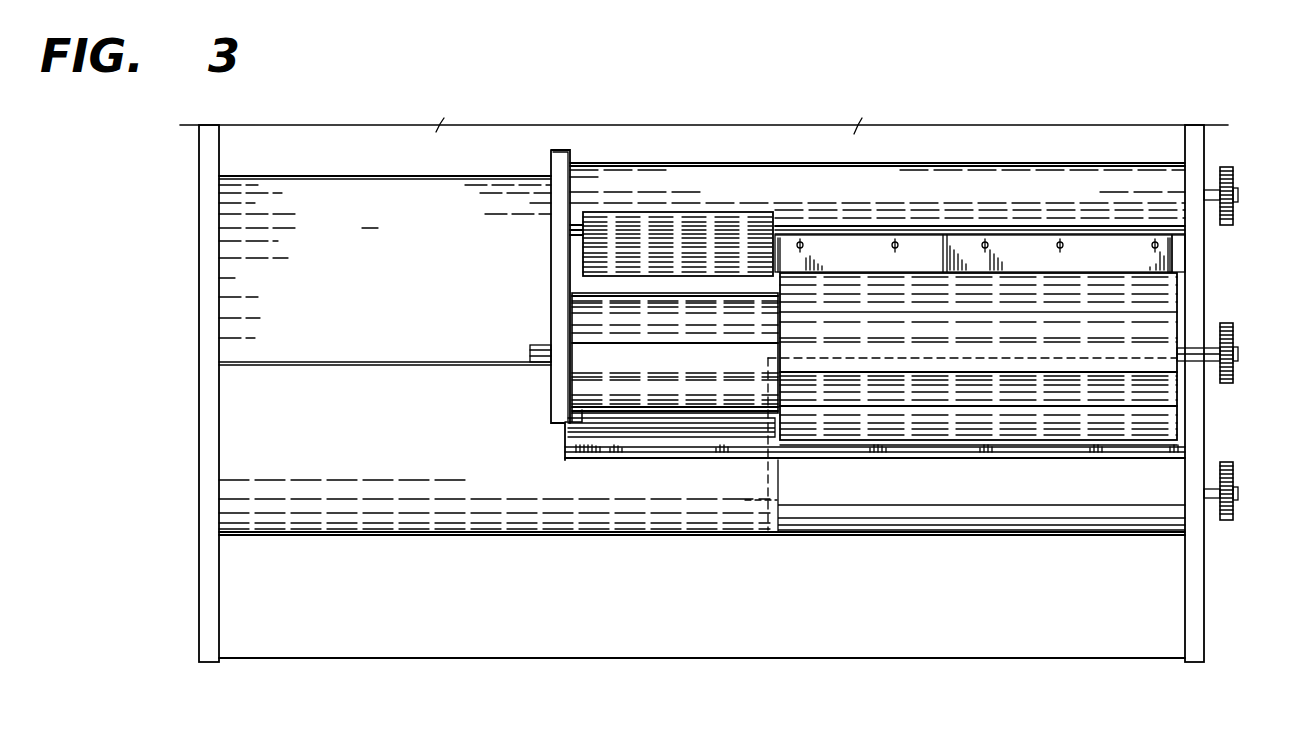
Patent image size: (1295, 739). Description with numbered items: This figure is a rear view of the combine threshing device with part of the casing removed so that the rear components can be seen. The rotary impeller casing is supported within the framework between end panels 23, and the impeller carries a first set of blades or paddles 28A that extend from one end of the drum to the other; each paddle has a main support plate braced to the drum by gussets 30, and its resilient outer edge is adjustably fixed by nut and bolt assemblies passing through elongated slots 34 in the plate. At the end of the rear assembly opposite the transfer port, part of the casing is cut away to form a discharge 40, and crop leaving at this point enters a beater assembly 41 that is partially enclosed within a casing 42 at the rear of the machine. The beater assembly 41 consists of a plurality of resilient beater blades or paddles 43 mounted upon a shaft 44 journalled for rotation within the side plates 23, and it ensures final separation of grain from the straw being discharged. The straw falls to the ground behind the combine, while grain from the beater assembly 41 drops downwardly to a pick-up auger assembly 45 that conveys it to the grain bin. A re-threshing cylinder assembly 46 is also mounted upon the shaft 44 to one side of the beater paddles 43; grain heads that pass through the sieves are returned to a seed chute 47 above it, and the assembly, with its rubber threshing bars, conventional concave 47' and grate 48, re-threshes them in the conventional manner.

The end panels 23 is at (210, 414).
The first set of blades or paddles 28A is at (1166, 264).
The gussets 30 is at (944, 258).
The elongated slots 34 is at (1060, 250).
The discharge 40 is at (582, 256).
The beater assembly 41 is at (1176, 290).
The casing 42 is at (764, 460).
The resilient beater blades or paddles 43 is at (1176, 404).
The shaft 44 is at (1208, 346).
The pick-up auger assembly 45 is at (1209, 498).
The re-threshing cylinder assembly 46 is at (650, 390).
The seed chute 47 is at (671, 267).
The concave 47' is at (536, 413).
The grate 48 is at (650, 430).